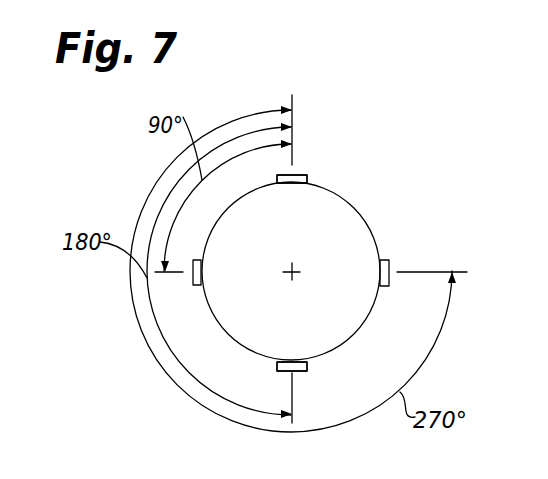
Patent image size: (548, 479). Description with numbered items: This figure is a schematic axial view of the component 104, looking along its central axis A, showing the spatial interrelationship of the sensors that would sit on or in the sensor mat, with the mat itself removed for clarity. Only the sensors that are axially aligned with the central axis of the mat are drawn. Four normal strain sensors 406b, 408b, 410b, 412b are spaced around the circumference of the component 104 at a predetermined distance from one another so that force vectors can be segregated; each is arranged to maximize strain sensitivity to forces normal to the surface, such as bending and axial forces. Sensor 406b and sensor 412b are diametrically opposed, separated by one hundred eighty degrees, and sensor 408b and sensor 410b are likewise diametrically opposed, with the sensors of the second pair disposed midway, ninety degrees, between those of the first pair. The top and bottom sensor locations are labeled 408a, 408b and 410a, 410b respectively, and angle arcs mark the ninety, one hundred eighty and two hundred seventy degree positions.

The component 104 is at (345, 217).
The axis A is at (293, 268).
The top pad 408a is at (305, 177).
The normal strain sensor 408b is at (292, 179).
The normal strain sensor 406b is at (388, 262).
The normal strain sensor 412b is at (197, 284).
The bottom pad 410a is at (307, 367).
The normal strain sensor 410b is at (292, 366).